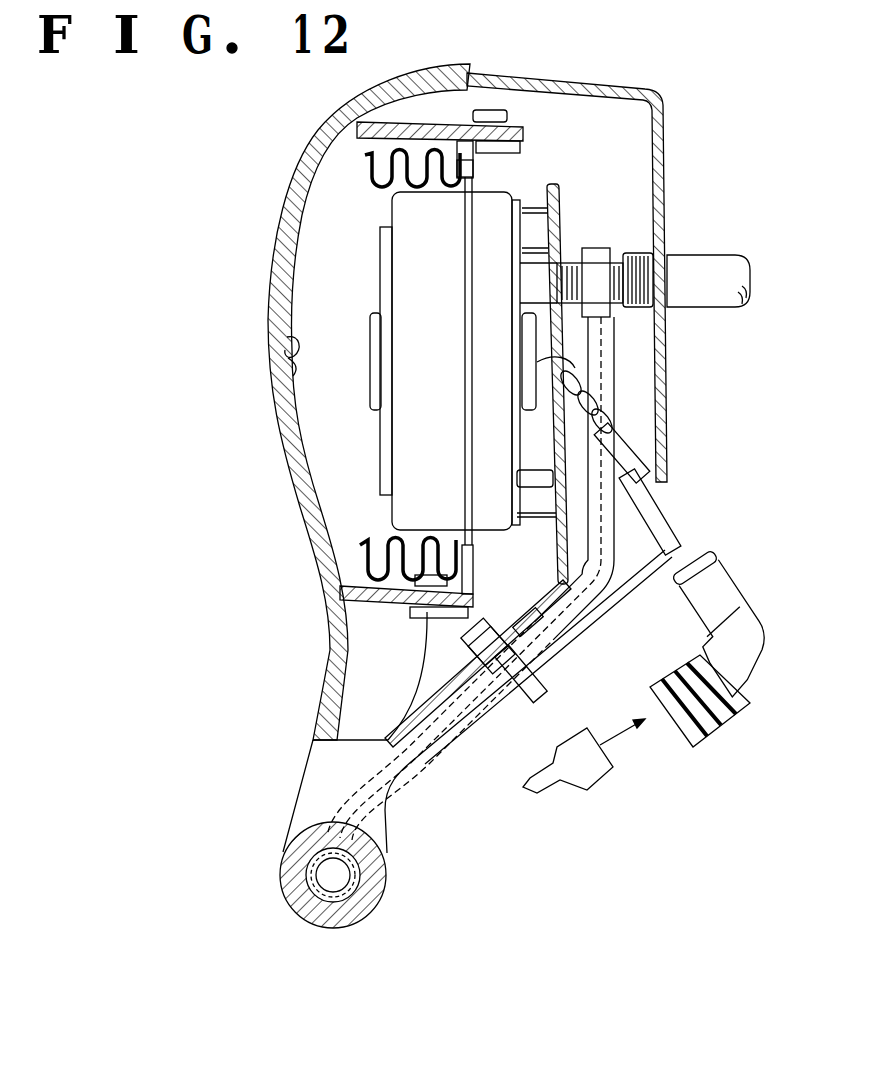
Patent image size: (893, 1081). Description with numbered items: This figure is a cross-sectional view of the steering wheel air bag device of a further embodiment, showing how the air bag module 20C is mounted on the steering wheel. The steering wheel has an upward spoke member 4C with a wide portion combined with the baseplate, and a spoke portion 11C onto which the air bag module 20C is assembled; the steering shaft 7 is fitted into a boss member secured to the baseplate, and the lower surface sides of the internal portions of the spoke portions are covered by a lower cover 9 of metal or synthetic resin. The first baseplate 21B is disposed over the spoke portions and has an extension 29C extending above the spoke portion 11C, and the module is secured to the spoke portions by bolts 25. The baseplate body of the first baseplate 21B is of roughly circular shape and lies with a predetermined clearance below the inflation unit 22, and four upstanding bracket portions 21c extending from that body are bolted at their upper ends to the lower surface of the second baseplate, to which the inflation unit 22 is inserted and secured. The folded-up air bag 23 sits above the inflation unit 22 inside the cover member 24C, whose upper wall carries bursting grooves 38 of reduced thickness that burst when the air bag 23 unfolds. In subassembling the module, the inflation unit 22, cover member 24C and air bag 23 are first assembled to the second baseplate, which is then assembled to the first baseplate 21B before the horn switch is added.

The upward spoke member 4C is at (617, 388).
The steering shaft 7 is at (730, 252).
The lower cover 9 is at (663, 193).
The spoke portion 11C is at (443, 713).
The air bag module 20C is at (528, 167).
The first baseplate 21B is at (557, 220).
The upstanding bracket portion 21c is at (545, 488).
The inflation unit 22 is at (378, 292).
The air bag 23 is at (385, 535).
The cover member 24C is at (279, 466).
The bolt 25 is at (513, 675).
The extension 29C is at (520, 623).
The bursting groove 38 is at (268, 336).